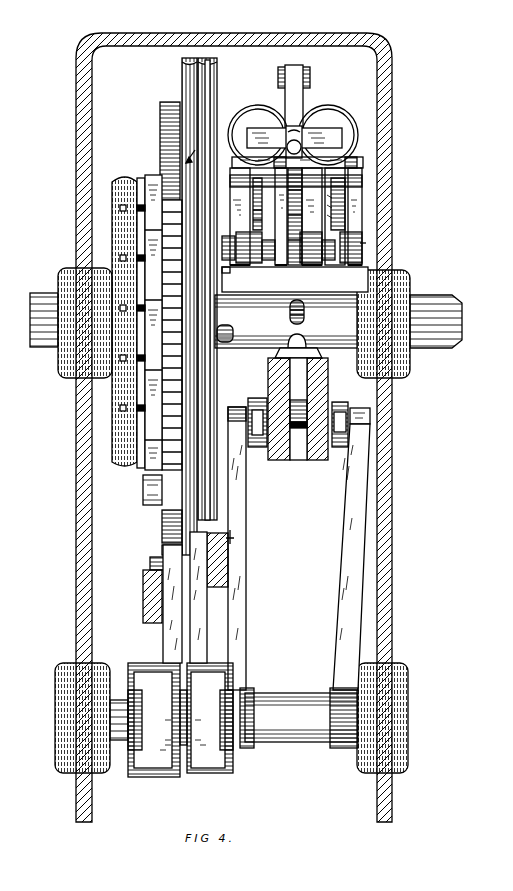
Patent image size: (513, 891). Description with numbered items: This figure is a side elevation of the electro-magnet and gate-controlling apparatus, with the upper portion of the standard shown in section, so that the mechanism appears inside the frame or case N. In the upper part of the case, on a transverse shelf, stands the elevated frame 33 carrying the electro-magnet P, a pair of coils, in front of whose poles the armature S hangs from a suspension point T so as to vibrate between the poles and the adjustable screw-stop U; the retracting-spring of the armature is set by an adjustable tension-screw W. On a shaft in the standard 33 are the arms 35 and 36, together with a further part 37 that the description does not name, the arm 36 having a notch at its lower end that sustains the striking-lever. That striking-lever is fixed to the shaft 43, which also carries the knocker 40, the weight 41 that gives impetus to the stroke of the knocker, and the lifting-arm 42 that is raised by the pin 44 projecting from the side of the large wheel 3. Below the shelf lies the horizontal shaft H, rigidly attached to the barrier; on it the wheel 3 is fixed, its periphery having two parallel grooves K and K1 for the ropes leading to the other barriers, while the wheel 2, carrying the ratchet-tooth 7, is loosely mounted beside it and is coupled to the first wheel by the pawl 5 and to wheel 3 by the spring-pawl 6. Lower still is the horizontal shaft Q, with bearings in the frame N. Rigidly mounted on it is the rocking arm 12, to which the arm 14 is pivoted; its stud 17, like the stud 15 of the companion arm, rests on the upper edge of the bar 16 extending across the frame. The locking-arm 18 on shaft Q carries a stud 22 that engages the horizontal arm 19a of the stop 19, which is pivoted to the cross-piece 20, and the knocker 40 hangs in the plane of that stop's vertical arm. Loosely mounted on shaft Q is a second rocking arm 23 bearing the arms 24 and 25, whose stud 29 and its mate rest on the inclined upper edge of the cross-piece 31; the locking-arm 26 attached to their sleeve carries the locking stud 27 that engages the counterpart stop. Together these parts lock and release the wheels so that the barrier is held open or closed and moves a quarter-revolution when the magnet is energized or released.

The frame or case N is at (226, 420).
The suspension point T is at (298, 77).
The armature S is at (294, 97).
The electro-magnet P is at (293, 135).
The adjustable screw-stop U is at (294, 130).
The adjustable tension-screw W is at (302, 150).
The elevated frame 33 is at (294, 216).
The arm 35 is at (262, 204).
The arm 36 is at (335, 216).
The shaft 37 is at (295, 216).
The shaft of the striking-lever 43 is at (366, 243).
The lifting-arm 42 is at (226, 268).
The horizontal shaft H is at (286, 321).
The pin 44 is at (226, 343).
The knocker 40 is at (297, 309).
The weight 41 is at (297, 316).
The arm 25 is at (297, 341).
The cross-piece 20 is at (298, 404).
The stop 19 is at (298, 409).
The locking-arm 26 is at (237, 548).
The locking stud 27 is at (238, 407).
The cross-piece 31 is at (232, 558).
The stud 29 is at (234, 538).
The horizontal arm of the stop 19a is at (341, 414).
The stud 22 is at (352, 410).
The locking-arm 18 is at (351, 557).
The horizontal shaft Q is at (299, 718).
The rocking arm 12 is at (154, 720).
The rocking arm 23 is at (212, 786).
The spring-pawl 6 is at (170, 151).
The wheel 2 is at (172, 335).
The groove K is at (189, 300).
The groove K1 is at (207, 283).
The wheel 3 is at (203, 290).
The ratchet-tooth 7 is at (191, 166).
The pawl 5 is at (137, 322).
The stud 15 is at (152, 490).
The stud 17 is at (150, 564).
The bar 16 is at (143, 594).
The arm 14 is at (172, 604).
The arm 24 is at (198, 597).